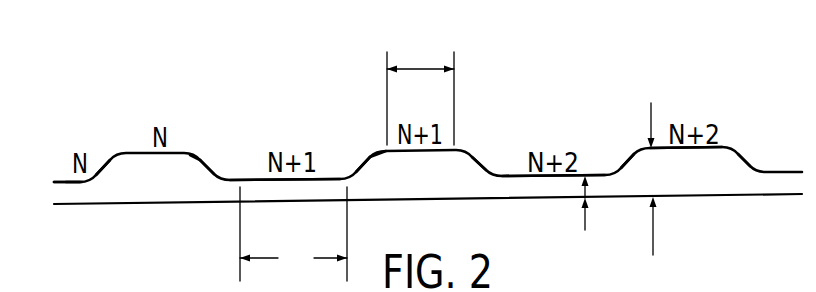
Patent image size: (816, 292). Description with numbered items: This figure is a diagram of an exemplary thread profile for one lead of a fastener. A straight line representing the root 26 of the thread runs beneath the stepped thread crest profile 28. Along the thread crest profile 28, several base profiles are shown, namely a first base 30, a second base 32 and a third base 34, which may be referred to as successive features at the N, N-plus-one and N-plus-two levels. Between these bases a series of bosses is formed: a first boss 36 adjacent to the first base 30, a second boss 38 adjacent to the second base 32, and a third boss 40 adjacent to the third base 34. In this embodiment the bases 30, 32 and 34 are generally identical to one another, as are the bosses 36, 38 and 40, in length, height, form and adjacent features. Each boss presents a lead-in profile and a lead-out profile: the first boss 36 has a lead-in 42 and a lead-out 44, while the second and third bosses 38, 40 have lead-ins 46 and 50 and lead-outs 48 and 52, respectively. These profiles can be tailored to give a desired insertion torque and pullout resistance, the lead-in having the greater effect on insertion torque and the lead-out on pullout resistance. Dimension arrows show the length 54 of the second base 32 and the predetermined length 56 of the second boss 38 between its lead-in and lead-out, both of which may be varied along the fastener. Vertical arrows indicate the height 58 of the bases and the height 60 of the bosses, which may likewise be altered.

The root of the thread 26 is at (146, 206).
The thread crest profile 28 is at (72, 181).
The first base 30 is at (75, 185).
The second base 32 is at (290, 182).
The third base 34 is at (552, 179).
The first boss 36 is at (193, 162).
The second boss 38 is at (383, 166).
The third boss 40 is at (686, 155).
The lead-in 42 is at (108, 167).
The lead-out 44 is at (218, 166).
The lead-in 46 is at (368, 163).
The lead-out 48 is at (480, 164).
The lead-in 50 is at (630, 164).
The lead-out 52 is at (746, 160).
The length 54 is at (293, 234).
The length 56 is at (418, 68).
The height of the bases 58 is at (587, 218).
The height of the bosses 60 is at (651, 233).